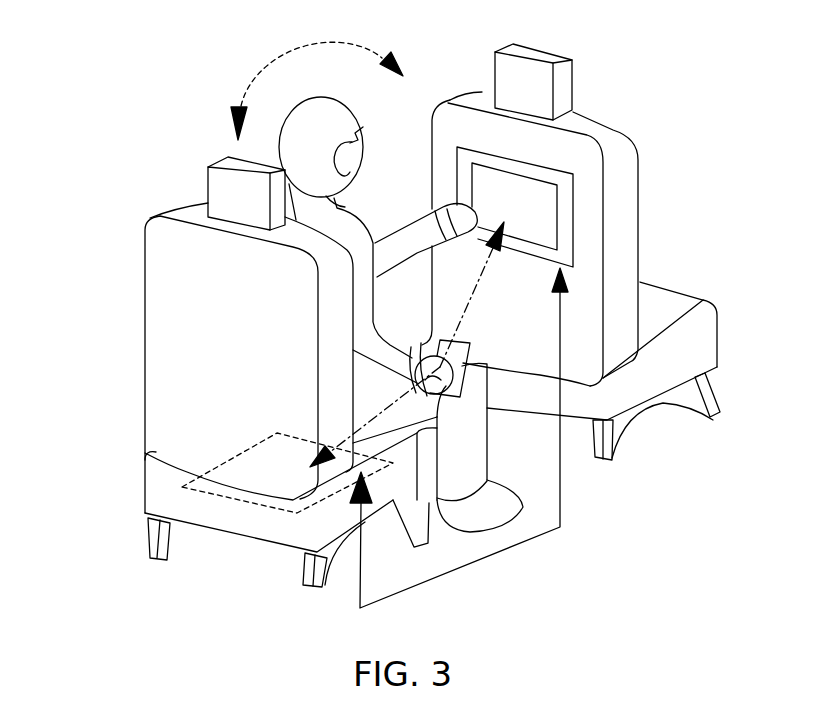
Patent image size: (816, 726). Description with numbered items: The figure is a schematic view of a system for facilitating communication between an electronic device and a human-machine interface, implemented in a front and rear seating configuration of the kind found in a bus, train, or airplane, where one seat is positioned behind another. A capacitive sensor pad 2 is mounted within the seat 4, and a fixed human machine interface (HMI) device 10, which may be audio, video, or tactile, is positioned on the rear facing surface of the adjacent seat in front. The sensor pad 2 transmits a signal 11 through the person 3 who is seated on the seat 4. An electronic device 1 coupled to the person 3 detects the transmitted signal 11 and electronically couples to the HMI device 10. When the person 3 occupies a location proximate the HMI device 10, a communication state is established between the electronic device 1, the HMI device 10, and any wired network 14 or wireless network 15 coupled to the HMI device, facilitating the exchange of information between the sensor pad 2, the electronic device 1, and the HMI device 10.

The electronic device 1 is at (463, 380).
The capacitive sensor pad 2 is at (228, 472).
The person 3 is at (290, 153).
The seat 4 is at (155, 318).
The human machine interface (HMI) device 10 is at (547, 216).
The signal 11 is at (388, 412).
The wired network 14 is at (360, 606).
The wireless network 15 is at (257, 85).